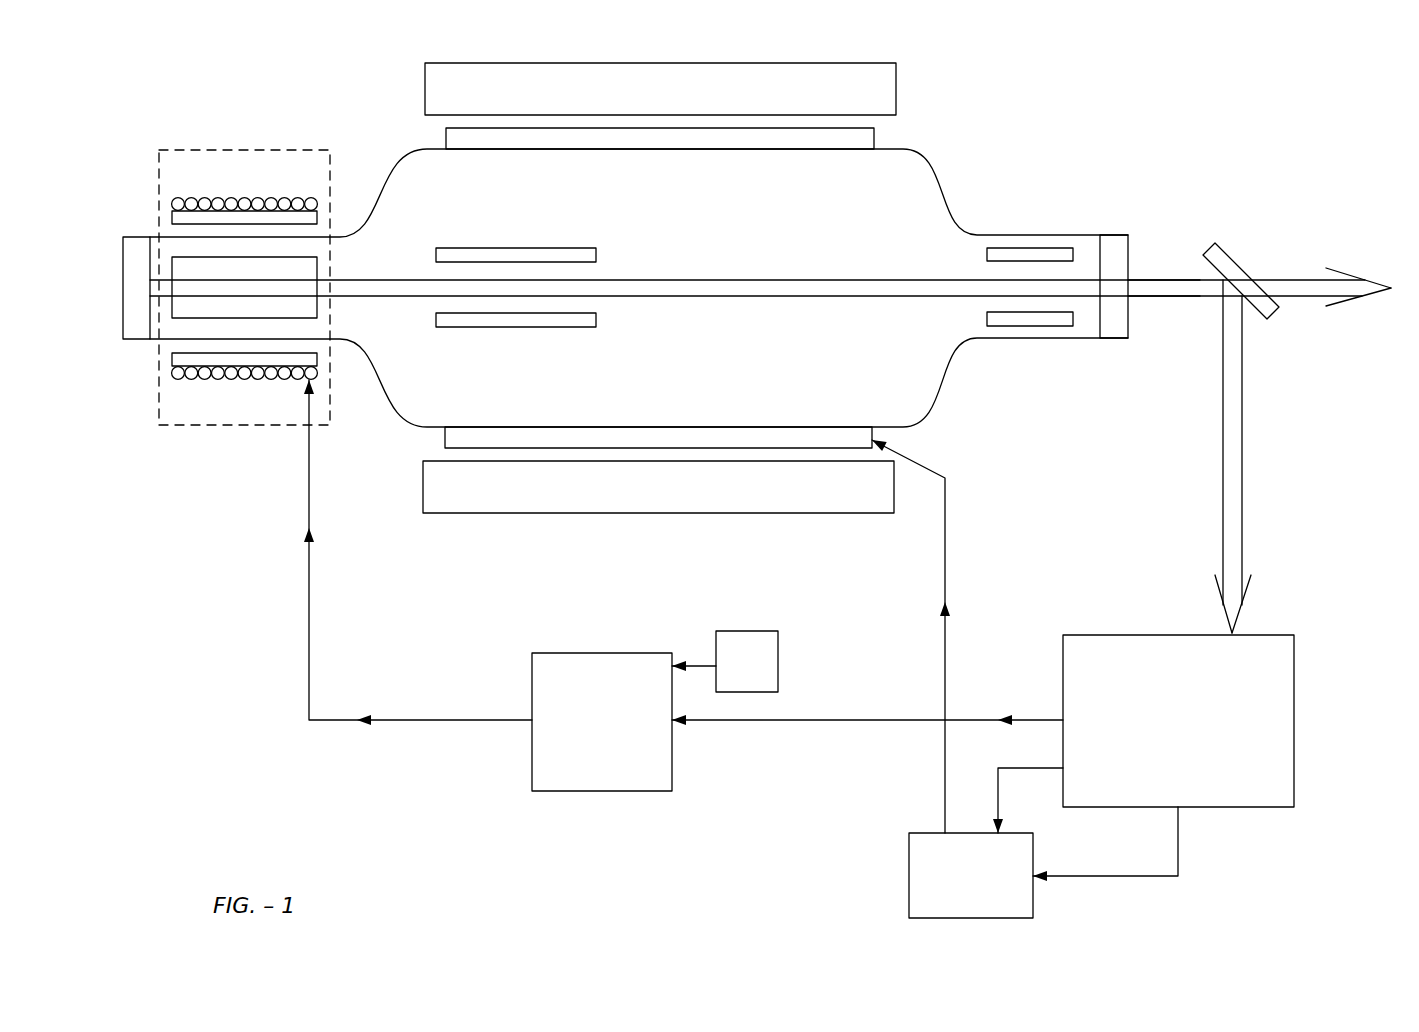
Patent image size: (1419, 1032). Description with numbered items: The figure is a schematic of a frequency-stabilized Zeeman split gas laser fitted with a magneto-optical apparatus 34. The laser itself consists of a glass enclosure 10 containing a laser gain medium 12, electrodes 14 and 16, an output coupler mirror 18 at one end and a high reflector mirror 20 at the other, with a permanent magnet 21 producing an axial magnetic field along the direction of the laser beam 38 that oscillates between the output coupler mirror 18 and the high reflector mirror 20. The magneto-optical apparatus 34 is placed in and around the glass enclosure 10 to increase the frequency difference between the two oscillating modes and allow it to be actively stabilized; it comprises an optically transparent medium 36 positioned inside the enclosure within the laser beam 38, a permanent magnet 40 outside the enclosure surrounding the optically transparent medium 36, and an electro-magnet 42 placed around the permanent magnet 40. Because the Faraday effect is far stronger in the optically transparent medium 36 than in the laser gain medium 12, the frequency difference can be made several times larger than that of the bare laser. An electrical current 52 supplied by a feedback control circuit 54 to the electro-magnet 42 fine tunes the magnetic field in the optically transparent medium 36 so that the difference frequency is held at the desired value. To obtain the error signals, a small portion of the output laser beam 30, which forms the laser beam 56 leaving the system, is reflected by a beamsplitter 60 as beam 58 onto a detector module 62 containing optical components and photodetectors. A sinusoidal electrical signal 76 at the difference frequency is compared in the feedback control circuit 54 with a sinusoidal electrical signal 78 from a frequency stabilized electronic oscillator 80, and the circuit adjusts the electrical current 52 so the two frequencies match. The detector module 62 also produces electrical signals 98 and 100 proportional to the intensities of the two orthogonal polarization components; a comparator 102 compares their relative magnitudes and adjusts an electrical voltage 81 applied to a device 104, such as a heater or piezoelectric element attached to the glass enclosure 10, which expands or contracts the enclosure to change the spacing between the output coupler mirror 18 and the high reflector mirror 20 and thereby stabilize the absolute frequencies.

The glass enclosure 10 is at (930, 172).
The laser gain medium 12 is at (826, 215).
The electrode 14 is at (510, 247).
The electrode 16 is at (987, 256).
The output coupler mirror 18 is at (1113, 340).
The high reflector mirror 20 is at (135, 233).
The permanent magnet 21 is at (880, 63).
The laser beam 30 is at (1164, 279).
The magneto-optical apparatus 34 is at (180, 145).
The optically transparent medium 36 is at (177, 320).
The laser beam 38 is at (698, 278).
The permanent magnet 40 is at (172, 217).
The electro-magnet 42 is at (300, 198).
The electrical current 52 is at (310, 570).
The feedback control circuit 54 is at (575, 791).
The laser beam 56 is at (1292, 277).
The beam 58 is at (1242, 452).
The beamsplitter 60 is at (1225, 248).
The detector module 62 is at (1271, 633).
The sinusoidal electrical signal 76 is at (862, 722).
The sinusoidal electrical signal 78 is at (695, 662).
The frequency stabilized electronic oscillator 80 is at (778, 663).
The electrical voltage 81 is at (945, 565).
The electrical signal 98 is at (1088, 877).
The electrical signal 100 is at (1028, 767).
The comparator 102 is at (908, 877).
The device 104 is at (440, 436).